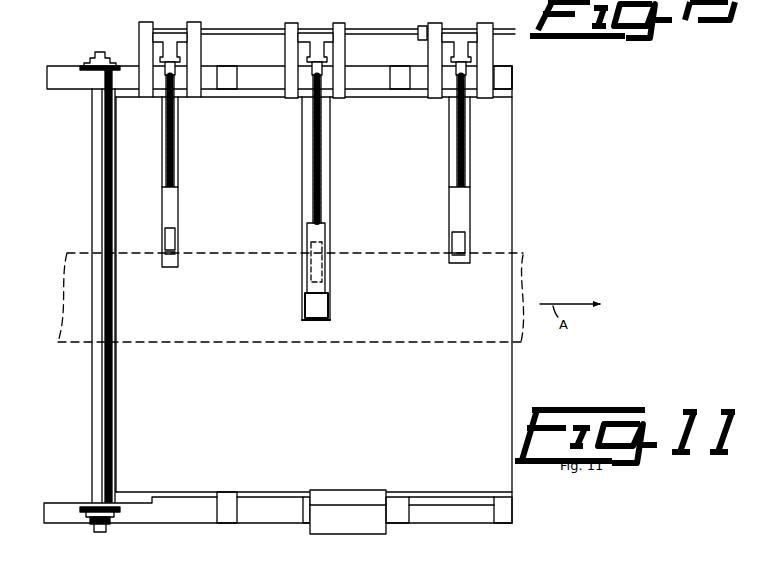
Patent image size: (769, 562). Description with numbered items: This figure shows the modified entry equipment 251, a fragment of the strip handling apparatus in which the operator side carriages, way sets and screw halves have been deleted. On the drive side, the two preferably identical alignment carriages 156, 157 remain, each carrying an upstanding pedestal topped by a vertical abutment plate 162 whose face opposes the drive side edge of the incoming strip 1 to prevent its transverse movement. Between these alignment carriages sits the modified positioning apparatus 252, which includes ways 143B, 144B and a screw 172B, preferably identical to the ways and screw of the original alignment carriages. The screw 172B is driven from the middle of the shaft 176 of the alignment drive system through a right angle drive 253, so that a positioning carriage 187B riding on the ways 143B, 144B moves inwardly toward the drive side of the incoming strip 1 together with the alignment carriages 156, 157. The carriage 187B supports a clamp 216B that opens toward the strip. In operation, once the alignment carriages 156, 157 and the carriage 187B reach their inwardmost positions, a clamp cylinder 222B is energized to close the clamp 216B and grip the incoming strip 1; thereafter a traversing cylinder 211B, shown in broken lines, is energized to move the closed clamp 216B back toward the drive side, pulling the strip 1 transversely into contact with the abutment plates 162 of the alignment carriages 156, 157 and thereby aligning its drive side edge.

The section line / sectioned region 1 is at (62, 346).
The alignment carriage 156 is at (471, 191).
The alignment carriage 157 is at (160, 222).
The abutment plate 162 is at (165, 253).
The shaft 176 is at (256, 30).
The right angle drive 253 is at (317, 30).
The modified entry equipment 251 is at (64, 412).
The modified positioning apparatus 252 is at (333, 324).
The way 144B is at (290, 50).
The way 143B is at (346, 50).
The screw 172B is at (321, 150).
The carriage 187B is at (334, 232).
The traversing cylinder 211B is at (312, 258).
The clamp 216B is at (318, 276).
The clamp cylinder 222B is at (324, 296).